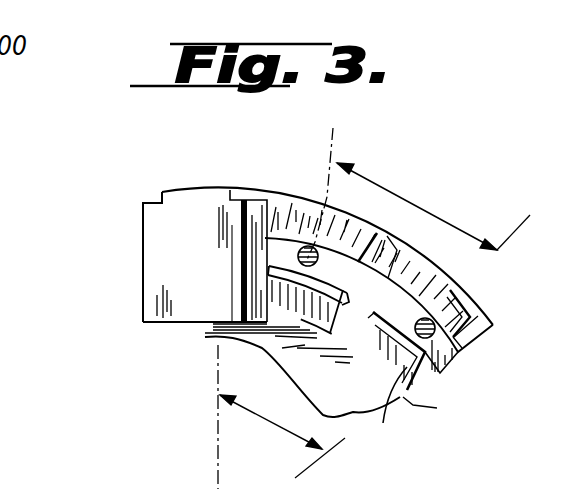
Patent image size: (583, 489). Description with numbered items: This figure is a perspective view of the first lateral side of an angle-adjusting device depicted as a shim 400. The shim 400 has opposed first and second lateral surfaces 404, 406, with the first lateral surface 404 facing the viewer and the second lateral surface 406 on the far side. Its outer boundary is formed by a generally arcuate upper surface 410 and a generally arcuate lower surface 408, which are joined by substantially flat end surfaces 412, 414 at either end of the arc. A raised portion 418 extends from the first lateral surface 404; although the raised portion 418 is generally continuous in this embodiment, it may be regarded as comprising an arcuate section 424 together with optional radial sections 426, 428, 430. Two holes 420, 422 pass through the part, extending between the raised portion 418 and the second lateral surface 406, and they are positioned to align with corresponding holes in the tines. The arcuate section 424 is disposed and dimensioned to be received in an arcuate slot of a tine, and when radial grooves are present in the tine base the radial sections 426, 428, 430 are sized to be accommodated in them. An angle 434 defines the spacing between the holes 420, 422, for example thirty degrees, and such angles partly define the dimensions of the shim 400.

The shim 400 is at (289, 294).
The first lateral surface 404 is at (453, 307).
The second lateral surface 406 is at (167, 190).
The lower surface 408 is at (412, 442).
The upper surface 410 is at (240, 190).
The end surface 412 is at (207, 271).
The end surface 414 is at (440, 373).
The raised portion 418 is at (343, 335).
The hole 420 is at (238, 326).
The hole 422 is at (400, 343).
The arcuate section 424 is at (403, 277).
The radial section 426 is at (268, 328).
The radial section 428 is at (213, 392).
The radial section 430 is at (400, 397).
The angle 434 is at (410, 192).